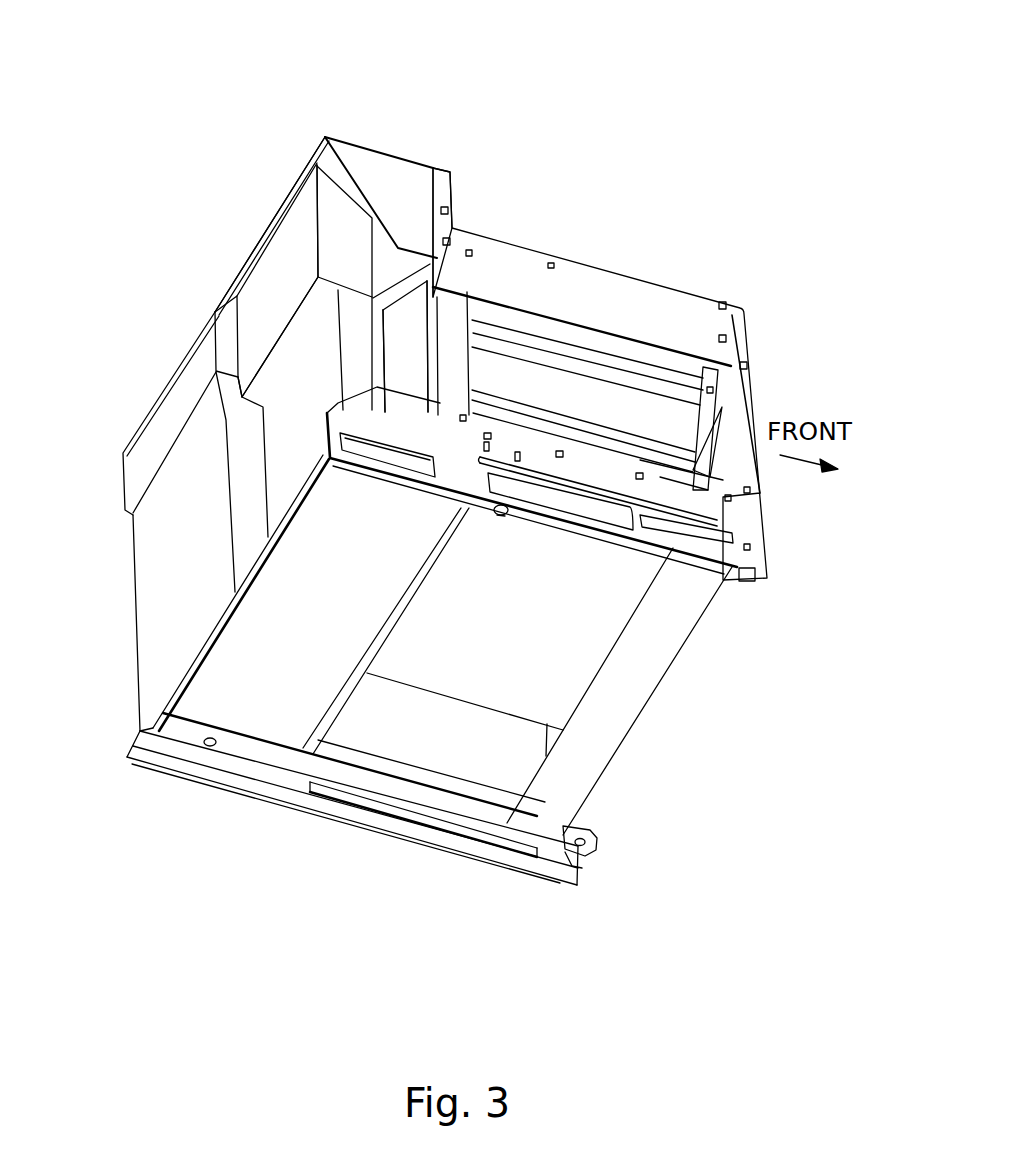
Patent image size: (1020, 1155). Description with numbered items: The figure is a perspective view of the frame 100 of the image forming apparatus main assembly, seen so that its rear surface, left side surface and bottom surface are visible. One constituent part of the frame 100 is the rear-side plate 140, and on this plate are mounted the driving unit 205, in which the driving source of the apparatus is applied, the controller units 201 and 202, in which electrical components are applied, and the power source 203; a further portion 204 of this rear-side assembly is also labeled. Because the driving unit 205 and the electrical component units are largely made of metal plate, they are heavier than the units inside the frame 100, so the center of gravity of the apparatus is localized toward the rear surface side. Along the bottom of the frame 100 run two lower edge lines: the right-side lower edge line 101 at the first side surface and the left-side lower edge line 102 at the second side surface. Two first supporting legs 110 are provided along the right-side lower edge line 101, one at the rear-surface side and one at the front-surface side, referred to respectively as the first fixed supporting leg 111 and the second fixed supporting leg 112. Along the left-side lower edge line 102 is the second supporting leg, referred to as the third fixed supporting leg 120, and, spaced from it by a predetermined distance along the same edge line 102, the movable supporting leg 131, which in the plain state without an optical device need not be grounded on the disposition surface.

The frame 100 is at (655, 113).
The right-side lower edge line 101 is at (397, 790).
The left-side lower edge line 102 is at (620, 538).
The first supporting legs 110 is at (403, 905).
The first fixed supporting leg 111 is at (210, 747).
The second fixed supporting leg 112 is at (572, 846).
The third fixed supporting leg 120 is at (500, 517).
The movable supporting leg 131 is at (747, 583).
The rear-side plate 140 is at (453, 182).
The controller unit 201 is at (287, 253).
The controller unit 202 is at (187, 387).
The power source 203 is at (160, 630).
The recessed portion 204 is at (287, 443).
The driving unit 205 is at (418, 347).